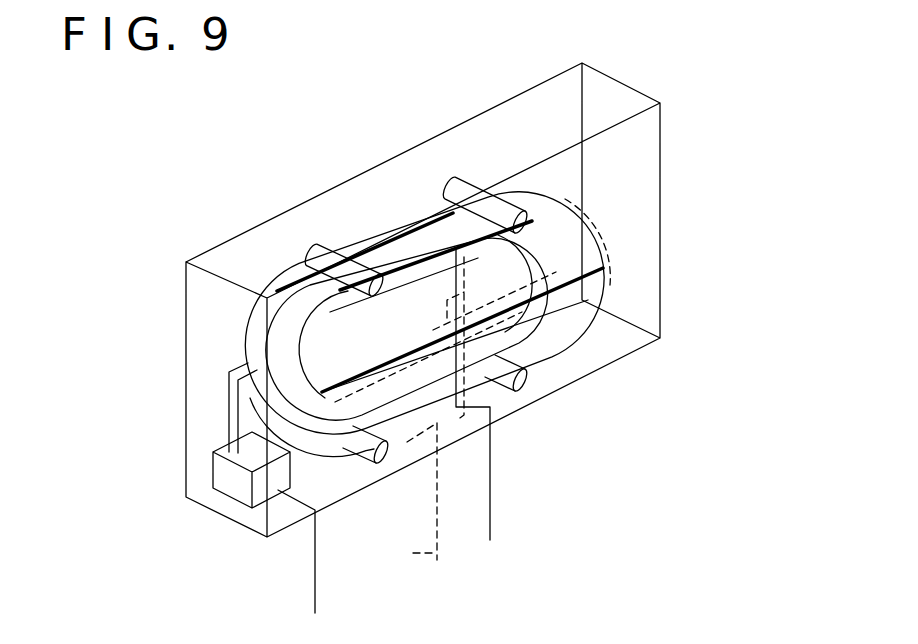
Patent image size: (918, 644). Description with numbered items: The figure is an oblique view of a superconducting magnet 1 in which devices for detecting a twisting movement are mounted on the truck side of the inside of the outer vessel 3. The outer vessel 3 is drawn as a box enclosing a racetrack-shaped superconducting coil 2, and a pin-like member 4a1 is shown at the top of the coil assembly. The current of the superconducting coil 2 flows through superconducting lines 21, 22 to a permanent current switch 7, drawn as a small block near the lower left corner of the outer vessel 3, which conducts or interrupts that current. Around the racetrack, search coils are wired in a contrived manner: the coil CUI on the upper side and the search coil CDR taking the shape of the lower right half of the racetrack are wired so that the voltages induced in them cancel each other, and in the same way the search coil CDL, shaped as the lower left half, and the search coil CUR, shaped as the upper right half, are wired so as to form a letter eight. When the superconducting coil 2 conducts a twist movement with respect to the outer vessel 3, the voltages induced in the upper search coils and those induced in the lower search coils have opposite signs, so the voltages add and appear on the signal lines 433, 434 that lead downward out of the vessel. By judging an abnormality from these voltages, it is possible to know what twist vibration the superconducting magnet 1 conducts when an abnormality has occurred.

The superconducting magnet 1 is at (452, 152).
The superconducting coil 2 is at (276, 290).
The outer vessel 3 is at (640, 340).
The core pin 4a1 is at (327, 245).
The permanent current switch 7 is at (225, 478).
The superconducting line 21 is at (229, 377).
The superconducting line 22 is at (242, 428).
The signal line 433 is at (492, 460).
The signal line 434 is at (437, 553).
The upper inner coil CUI is at (318, 397).
The search coil CUR is at (528, 224).
The search coil CDL is at (408, 470).
The search coil CDR is at (550, 364).